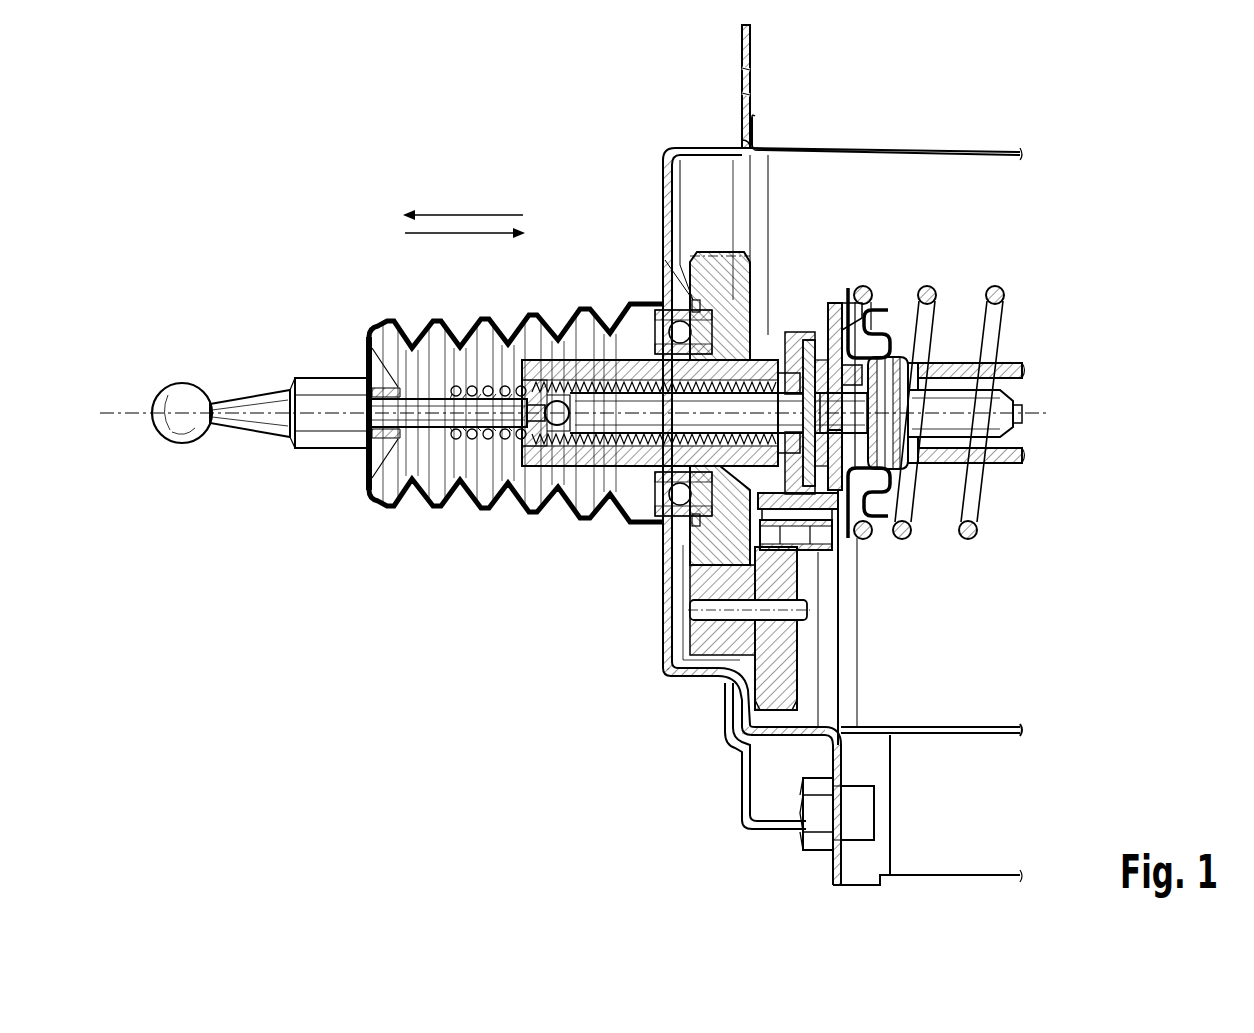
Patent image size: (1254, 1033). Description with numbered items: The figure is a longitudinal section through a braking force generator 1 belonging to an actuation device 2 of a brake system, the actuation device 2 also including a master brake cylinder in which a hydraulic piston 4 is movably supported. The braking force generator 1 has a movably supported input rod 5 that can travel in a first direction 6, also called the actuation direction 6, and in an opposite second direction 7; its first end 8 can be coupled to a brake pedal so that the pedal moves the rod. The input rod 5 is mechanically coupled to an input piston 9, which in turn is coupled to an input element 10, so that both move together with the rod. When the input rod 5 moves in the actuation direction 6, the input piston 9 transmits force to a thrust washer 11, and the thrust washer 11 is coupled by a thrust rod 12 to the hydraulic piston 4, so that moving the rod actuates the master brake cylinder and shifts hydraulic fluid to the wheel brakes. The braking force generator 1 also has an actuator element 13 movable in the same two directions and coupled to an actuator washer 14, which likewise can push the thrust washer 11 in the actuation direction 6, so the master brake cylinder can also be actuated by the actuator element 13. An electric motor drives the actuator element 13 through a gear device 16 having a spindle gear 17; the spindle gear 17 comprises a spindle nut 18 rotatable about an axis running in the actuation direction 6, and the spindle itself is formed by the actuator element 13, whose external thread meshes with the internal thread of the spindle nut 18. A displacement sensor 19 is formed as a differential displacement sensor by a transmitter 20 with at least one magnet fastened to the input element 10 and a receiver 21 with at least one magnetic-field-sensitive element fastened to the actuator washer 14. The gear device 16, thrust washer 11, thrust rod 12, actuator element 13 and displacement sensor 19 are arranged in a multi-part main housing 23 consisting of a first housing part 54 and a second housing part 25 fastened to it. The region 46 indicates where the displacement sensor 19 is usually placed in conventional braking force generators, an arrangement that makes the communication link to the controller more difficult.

The braking force generator 1 is at (473, 632).
The actuation device 2 is at (1018, 252).
The hydraulic piston 4 is at (945, 366).
The input rod 5 is at (427, 402).
The first direction 6 is at (464, 233).
The second direction 7 is at (464, 214).
The first end 8 is at (180, 395).
The input piston 9 is at (627, 400).
The input element 10 is at (836, 447).
The thrust washer 11 is at (886, 354).
The thrust rod 12 is at (980, 422).
The actuator element 13 is at (566, 382).
The actuator washer 14 is at (835, 330).
The gear device 16 is at (692, 706).
The spindle gear 17 is at (733, 488).
The spindle nut 18 is at (549, 458).
The displacement sensor 19 is at (832, 572).
The transmitter 20 is at (826, 505).
The receiver 21 is at (833, 543).
The main housing 23 is at (724, 135).
The second housing part 25 is at (849, 148).
The region 46 is at (797, 300).
The first housing part 54 is at (665, 184).